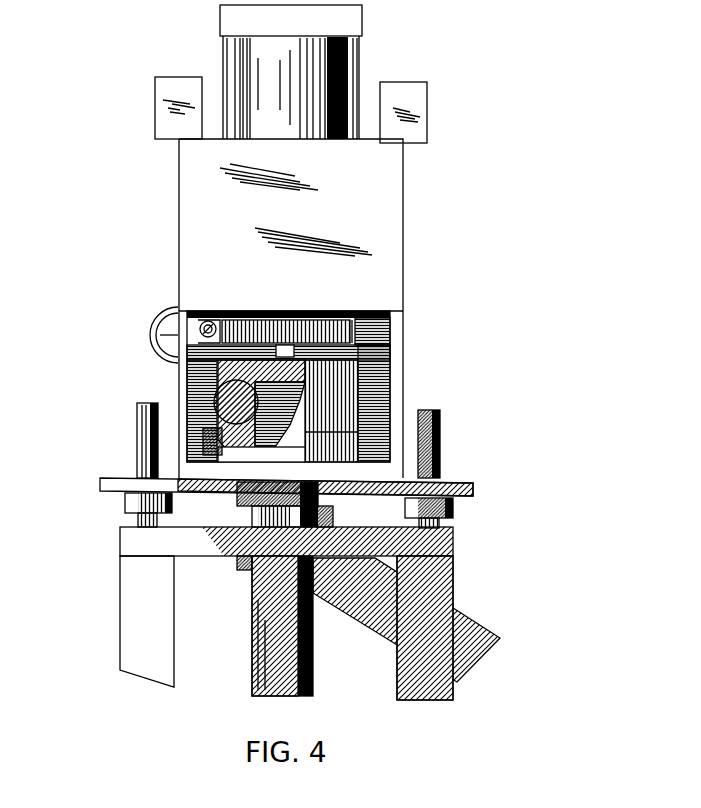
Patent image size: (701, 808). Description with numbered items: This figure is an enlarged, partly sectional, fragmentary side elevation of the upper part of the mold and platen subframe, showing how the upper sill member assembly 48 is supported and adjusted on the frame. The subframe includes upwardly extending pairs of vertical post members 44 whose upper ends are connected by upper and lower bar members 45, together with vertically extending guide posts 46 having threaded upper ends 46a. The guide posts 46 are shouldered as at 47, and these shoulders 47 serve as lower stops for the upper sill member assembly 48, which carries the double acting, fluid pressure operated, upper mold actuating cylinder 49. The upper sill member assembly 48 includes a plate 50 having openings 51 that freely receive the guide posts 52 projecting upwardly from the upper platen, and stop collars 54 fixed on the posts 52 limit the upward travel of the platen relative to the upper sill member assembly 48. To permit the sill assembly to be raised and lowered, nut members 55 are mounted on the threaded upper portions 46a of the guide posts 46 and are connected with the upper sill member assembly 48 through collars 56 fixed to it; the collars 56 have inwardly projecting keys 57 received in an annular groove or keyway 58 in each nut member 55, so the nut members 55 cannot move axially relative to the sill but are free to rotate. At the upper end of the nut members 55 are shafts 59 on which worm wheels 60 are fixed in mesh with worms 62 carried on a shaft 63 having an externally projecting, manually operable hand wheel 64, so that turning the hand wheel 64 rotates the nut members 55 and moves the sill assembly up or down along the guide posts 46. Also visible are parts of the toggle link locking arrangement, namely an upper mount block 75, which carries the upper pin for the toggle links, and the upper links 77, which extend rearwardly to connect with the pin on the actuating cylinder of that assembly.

The vertical post members 44 is at (175, 650).
The upper and lower bar members 45 is at (455, 538).
The guide posts 46 is at (313, 664).
The threaded upper ends 46a is at (188, 374).
The shoulders 47 is at (236, 504).
The upper sill member assembly 48 is at (405, 170).
The fluid pressure operated cylinder 49 is at (363, 34).
The plate 50 is at (100, 485).
The openings 51 is at (134, 476).
The guide posts 52 is at (137, 416).
The stop collars 54 is at (125, 503).
The nut members 55 is at (388, 362).
The collars 56 is at (388, 398).
The keys 57 is at (190, 398).
The annular groove 58 is at (220, 458).
The shafts 59 is at (310, 320).
The worm wheels 60 is at (276, 320).
The worms 62 is at (197, 313).
The shaft 63 is at (216, 312).
The hand wheel 64 is at (163, 318).
The upper mount block 75 is at (333, 513).
The upper links 77 is at (487, 640).